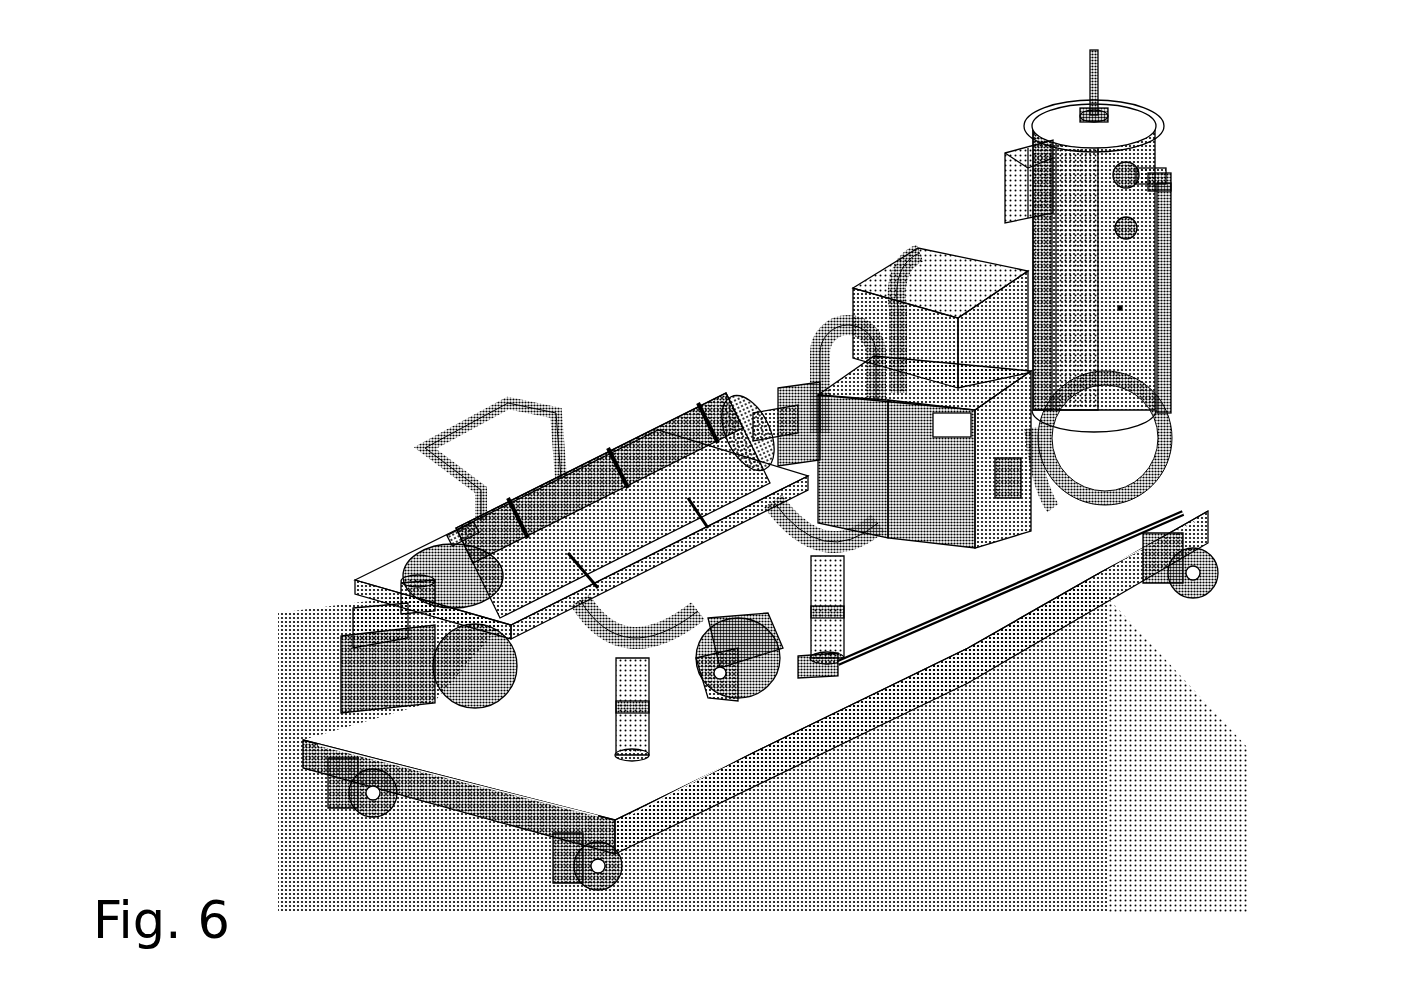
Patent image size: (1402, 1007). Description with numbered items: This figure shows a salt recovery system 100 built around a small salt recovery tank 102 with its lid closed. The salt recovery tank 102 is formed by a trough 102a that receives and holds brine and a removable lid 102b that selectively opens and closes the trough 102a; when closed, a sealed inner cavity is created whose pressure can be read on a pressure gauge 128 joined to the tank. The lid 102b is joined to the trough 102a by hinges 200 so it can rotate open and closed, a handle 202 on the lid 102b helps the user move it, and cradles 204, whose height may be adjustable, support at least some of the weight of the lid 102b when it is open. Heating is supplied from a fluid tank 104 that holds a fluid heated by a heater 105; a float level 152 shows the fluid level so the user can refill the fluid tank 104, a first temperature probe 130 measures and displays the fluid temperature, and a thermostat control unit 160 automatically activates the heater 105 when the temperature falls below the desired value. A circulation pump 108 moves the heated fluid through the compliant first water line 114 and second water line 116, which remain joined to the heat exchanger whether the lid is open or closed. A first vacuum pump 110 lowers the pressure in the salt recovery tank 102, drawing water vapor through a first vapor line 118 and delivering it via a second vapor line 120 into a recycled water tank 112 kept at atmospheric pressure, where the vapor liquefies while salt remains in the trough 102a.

The salt recovery system 100 is at (190, 120).
The salt recovery tank 102 is at (352, 515).
The trough 102a is at (520, 645).
The removable lid 102b is at (437, 537).
The fluid tank 104 is at (1120, 120).
The heater 105 is at (1087, 318).
The circulation pump 108 is at (727, 672).
The first vacuum pump 110 is at (773, 382).
The recycled water tank 112 is at (950, 258).
The first water line 114 is at (990, 563).
The second water line 116 is at (1155, 378).
The first vapor line 118 is at (808, 330).
The second vapor line 120 is at (888, 308).
The pressure gauge 128 is at (405, 592).
The first temperature probe 130 is at (1120, 225).
The float level 152 is at (1092, 62).
The thermostat control unit 160 is at (1015, 202).
The hinges 200 is at (700, 507).
The handle 202 is at (485, 400).
The cradles 204 is at (640, 633).